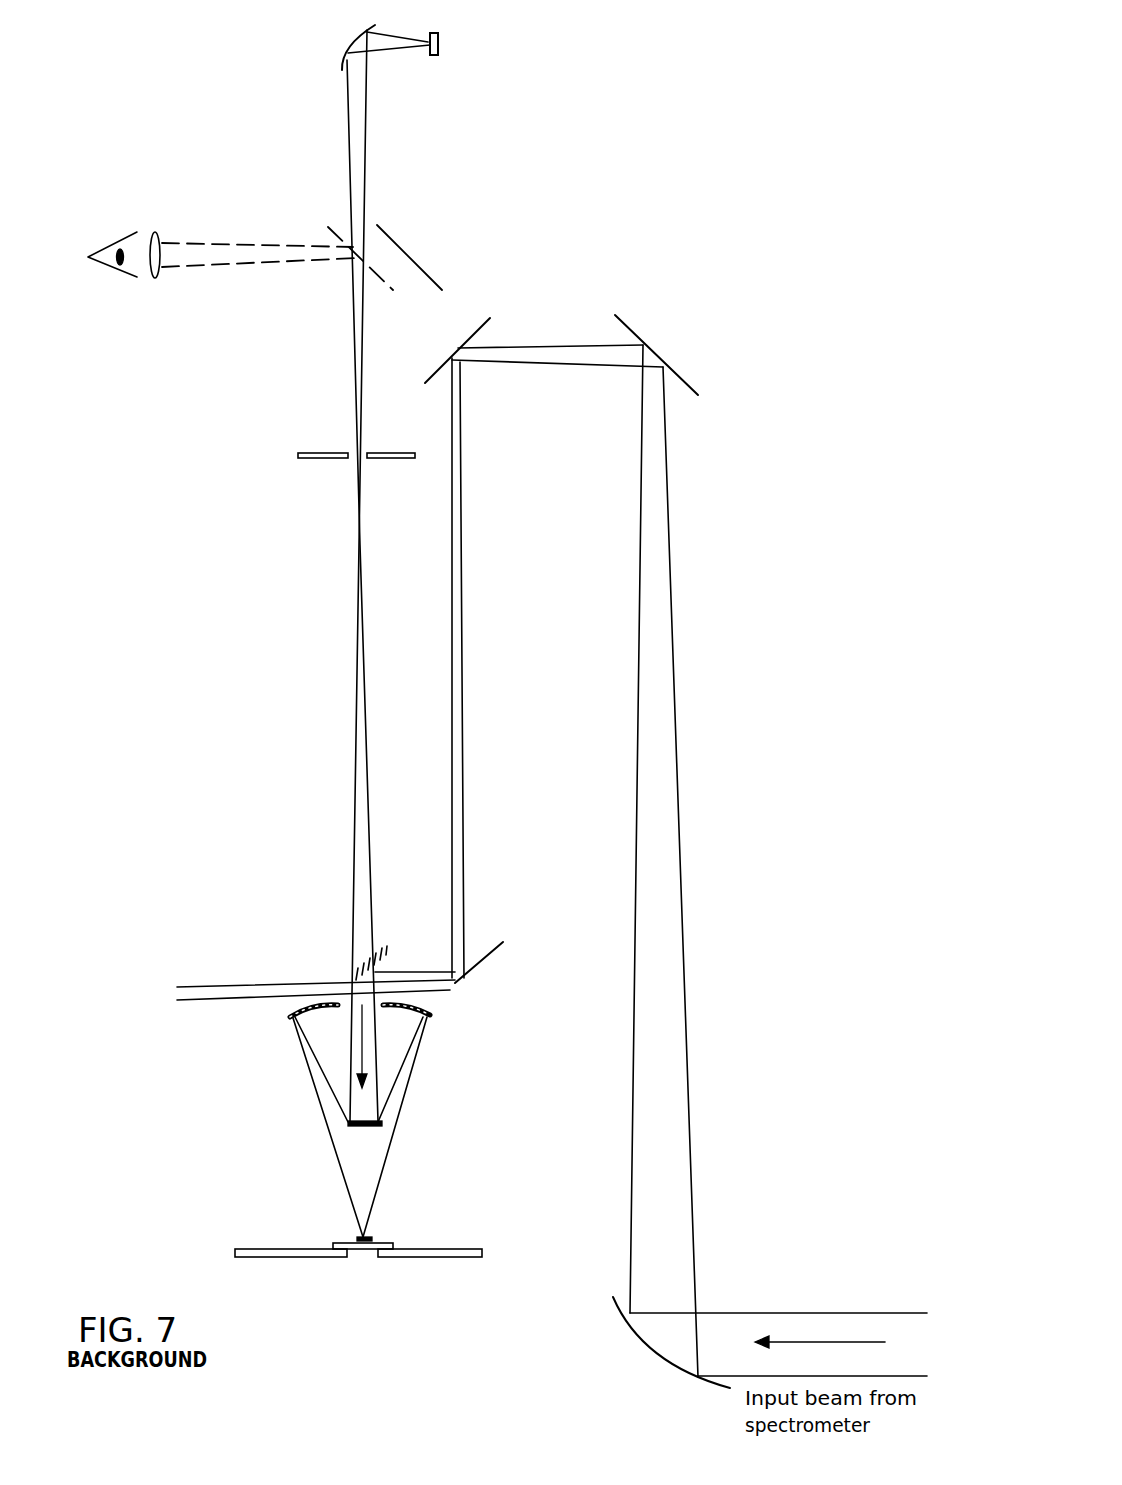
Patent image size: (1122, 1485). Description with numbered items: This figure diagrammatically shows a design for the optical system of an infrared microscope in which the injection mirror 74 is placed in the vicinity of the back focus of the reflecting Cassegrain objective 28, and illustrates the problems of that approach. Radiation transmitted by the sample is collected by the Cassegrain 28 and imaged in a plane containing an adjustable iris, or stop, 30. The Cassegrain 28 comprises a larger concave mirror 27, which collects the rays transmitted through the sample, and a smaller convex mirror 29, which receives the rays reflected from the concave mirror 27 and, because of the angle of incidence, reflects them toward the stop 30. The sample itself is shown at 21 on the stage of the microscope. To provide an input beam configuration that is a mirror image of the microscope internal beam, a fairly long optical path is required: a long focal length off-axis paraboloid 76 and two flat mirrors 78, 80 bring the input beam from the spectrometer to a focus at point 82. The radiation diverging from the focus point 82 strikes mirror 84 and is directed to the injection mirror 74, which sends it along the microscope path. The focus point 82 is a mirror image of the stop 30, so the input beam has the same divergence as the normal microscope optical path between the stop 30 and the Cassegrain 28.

The sample 21 is at (377, 1240).
The larger concave mirror 27 is at (433, 1015).
The reflecting Cassegrain objective 28 is at (381, 1109).
The smaller convex mirror 29 is at (363, 1128).
The adjustable iris, or stop 30 is at (368, 457).
The injection mirror 74 is at (390, 960).
The long focal length off-axis paraboloid 76 is at (712, 1385).
The flat mirror 78 is at (627, 323).
The flat mirror 80 is at (480, 323).
The focus point 82 is at (458, 563).
The mirror 84 is at (500, 943).